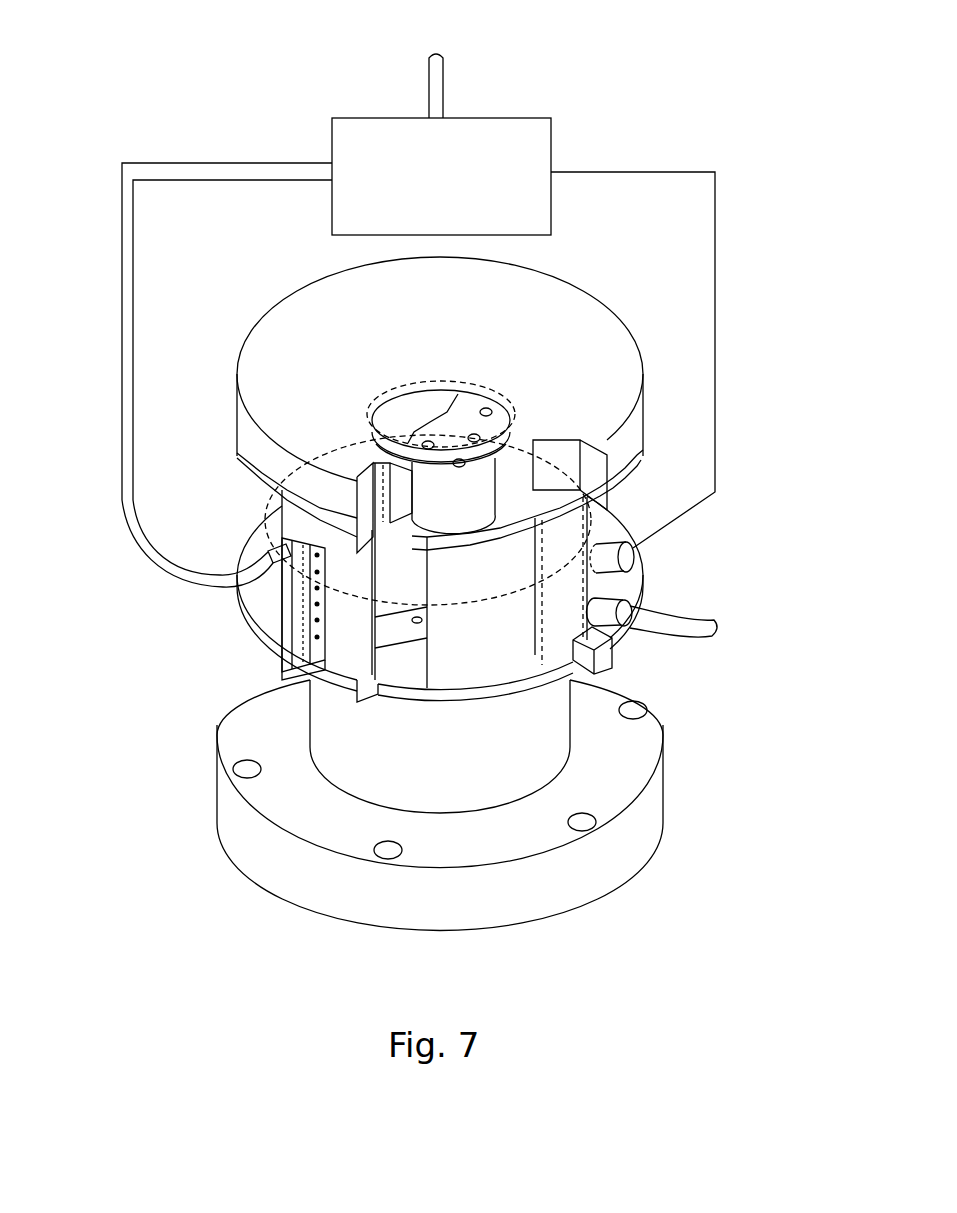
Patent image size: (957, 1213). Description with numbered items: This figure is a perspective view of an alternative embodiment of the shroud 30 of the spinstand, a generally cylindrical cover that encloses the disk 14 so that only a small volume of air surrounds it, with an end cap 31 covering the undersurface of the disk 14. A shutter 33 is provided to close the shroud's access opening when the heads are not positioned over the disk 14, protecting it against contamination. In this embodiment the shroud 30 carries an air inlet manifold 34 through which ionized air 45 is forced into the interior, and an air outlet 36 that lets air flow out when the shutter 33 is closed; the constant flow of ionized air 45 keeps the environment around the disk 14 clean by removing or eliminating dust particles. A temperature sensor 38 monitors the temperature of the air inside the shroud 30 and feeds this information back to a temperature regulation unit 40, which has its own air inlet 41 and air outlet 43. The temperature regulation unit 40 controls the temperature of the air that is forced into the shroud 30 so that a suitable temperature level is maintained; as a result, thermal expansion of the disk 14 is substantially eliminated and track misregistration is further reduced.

The disk 14 is at (503, 583).
The shroud 30 is at (163, 875).
The end cap 31 is at (548, 303).
The shutter 33 is at (513, 643).
The air inlet manifold 34 is at (288, 612).
The air outlet 36 is at (610, 607).
The temperature sensor 38 is at (627, 557).
The temperature regulation unit 40 is at (533, 175).
The air inlet 41 is at (420, 97).
The air outlet 43 is at (318, 170).
The ionized air 45 is at (187, 581).